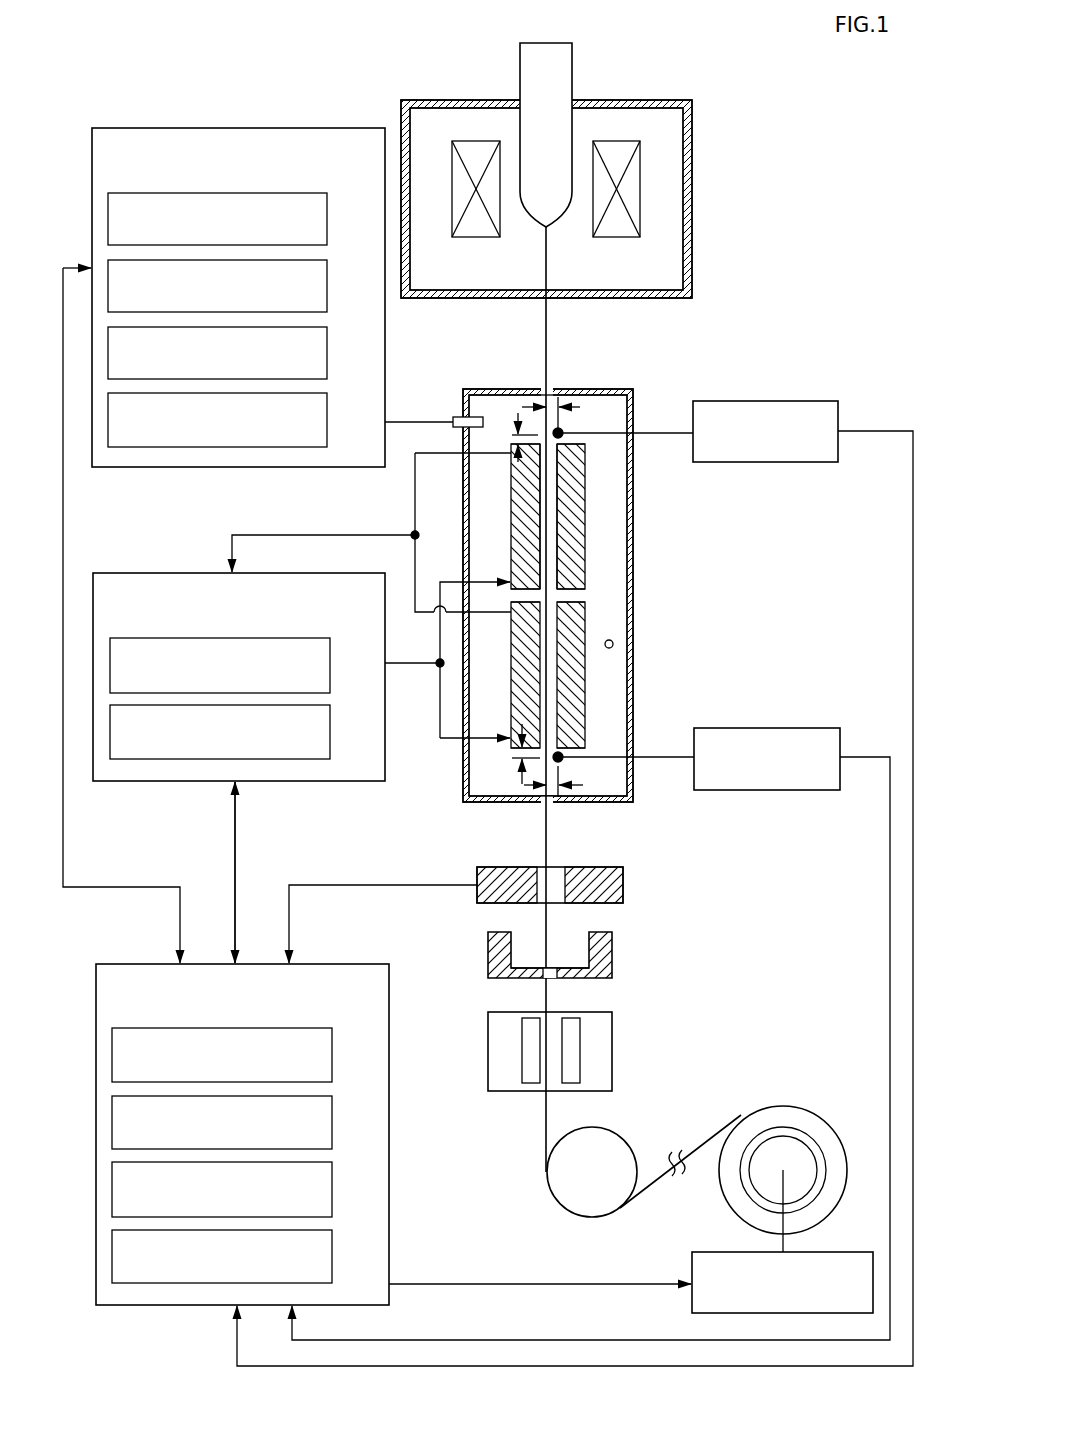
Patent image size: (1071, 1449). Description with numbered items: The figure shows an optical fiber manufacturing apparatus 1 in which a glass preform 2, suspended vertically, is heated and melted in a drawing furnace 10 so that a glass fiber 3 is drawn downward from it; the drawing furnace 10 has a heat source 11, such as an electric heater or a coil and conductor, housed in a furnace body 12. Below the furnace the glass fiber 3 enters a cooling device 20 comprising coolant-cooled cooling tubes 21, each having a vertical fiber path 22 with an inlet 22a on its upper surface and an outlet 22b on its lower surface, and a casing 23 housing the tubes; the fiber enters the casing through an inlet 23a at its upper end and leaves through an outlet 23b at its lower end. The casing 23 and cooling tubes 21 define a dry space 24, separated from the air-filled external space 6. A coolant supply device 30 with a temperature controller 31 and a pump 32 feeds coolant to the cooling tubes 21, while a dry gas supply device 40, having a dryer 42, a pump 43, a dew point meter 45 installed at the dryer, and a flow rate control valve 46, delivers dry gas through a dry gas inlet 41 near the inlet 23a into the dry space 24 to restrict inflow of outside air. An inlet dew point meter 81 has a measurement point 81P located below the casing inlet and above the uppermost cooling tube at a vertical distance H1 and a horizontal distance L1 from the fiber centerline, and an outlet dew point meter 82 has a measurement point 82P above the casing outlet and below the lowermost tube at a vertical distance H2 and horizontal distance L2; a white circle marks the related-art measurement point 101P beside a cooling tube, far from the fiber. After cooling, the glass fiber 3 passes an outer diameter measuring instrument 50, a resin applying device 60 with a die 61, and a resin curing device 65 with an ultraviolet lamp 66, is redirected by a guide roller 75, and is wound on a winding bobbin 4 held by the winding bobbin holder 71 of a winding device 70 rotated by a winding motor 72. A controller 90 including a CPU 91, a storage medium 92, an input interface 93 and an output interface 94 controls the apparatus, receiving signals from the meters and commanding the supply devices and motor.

The optical fiber manufacturing apparatus 1 is at (234, 25).
The glass preform 2 is at (548, 55).
The glass fiber 3 is at (546, 312).
The winding bobbin 4 is at (780, 1128).
The external space 6 is at (423, 336).
The drawing furnace 10 is at (436, 97).
The heat source 11 is at (637, 183).
The furnace body 12 is at (691, 133).
The cooling device 20 is at (622, 386).
The cooling tube 21 is at (572, 538).
The fiber path 22 is at (552, 510).
The inlet of the fiber path 22a is at (560, 470).
The outlet of the fiber path 22b is at (560, 575).
The casing 23 is at (463, 766).
The inlet of the casing 23a is at (551, 396).
The outlet of the casing 23b is at (553, 800).
The dry space 24 is at (489, 501).
The coolant supply device 30 is at (157, 572).
The temperature controller 31 is at (332, 664).
The pump 32 is at (332, 731).
The dry gas supply device 40 is at (157, 126).
The dry gas inlet 41 is at (483, 417).
The dryer 42 is at (329, 221).
The pump 43 is at (329, 355).
The dew point meter 45 is at (329, 288).
The flow rate control valve 46 is at (329, 422).
The outer diameter measuring instrument 50 is at (634, 883).
The resin applying device 60 is at (620, 941).
The die 61 is at (608, 958).
The resin curing device 65 is at (620, 1033).
The ultraviolet lamp 66 is at (575, 1052).
The winding device 70 is at (738, 1110).
The winding bobbin holder 71 is at (793, 1150).
The winding motor 72 is at (733, 1252).
The guide roller 75 is at (597, 1133).
The inlet dew point meter 81 is at (765, 401).
The measurement point of the inlet dew point meter 81P is at (561, 431).
The outlet dew point meter 82 is at (768, 728).
The measurement point of the outlet dew point meter 82P is at (561, 760).
The controller 90 is at (136, 962).
The central processing unit 91 is at (334, 1056).
The storage medium 92 is at (334, 1122).
The input interface 93 is at (334, 1189).
The output interface 94 is at (334, 1256).
The related-art dew point measurement point 101P is at (613, 643).
The vertical distance H1 is at (518, 412).
The vertical distance H2 is at (520, 780).
The horizontal distance L1 is at (574, 405).
The horizontal distance L2 is at (575, 786).